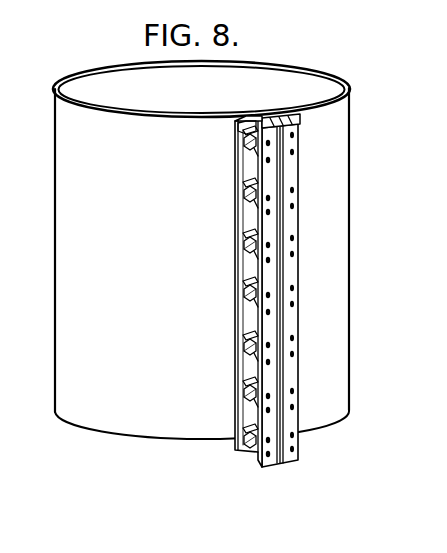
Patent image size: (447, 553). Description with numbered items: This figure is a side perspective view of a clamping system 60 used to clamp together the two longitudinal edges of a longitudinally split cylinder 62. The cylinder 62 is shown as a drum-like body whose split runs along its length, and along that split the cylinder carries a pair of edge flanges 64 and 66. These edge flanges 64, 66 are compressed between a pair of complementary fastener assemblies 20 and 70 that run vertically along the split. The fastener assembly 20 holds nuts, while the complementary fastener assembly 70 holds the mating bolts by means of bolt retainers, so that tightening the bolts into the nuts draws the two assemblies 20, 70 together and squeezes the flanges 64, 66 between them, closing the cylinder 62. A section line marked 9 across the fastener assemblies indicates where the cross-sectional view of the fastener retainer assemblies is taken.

The longitudinally split cylinder 62 is at (354, 188).
The fastener assembly 70 is at (300, 258).
The clamping system 60 is at (237, 377).
The fastener assembly 20 is at (239, 238).
The edge flange 64 is at (254, 119).
The edge flange 66 is at (259, 118).
The section line 9- 9 is at (222, 287).